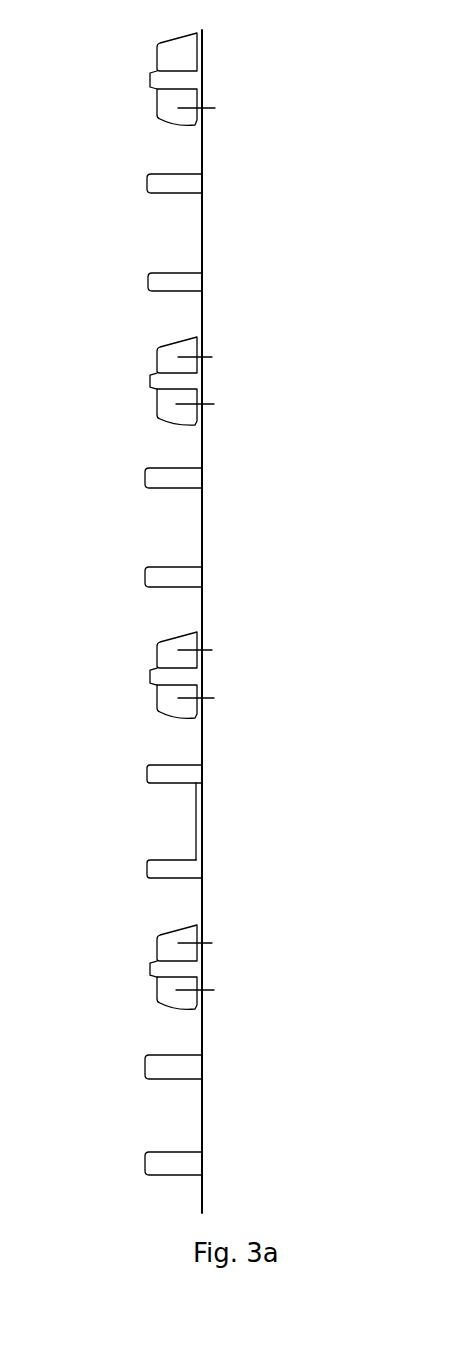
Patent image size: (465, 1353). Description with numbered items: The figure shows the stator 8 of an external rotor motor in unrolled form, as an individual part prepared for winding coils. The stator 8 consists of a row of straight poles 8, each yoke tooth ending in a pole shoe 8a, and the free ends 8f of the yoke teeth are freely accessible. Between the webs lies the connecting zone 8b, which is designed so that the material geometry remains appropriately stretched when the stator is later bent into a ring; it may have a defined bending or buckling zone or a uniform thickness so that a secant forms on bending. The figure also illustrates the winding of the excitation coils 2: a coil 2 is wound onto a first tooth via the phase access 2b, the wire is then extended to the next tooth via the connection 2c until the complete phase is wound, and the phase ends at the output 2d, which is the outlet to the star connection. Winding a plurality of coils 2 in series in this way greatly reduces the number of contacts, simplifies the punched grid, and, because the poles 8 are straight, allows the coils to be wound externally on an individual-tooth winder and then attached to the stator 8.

The coils 2 is at (152, 990).
The phase access 2b is at (249, 1013).
The connection 2c is at (210, 813).
The output 2d is at (183, 57).
The stator 8 is at (148, 768).
The pole shoe 8a is at (172, 771).
The connecting zone 8b is at (202, 912).
The free ends 8f is at (145, 865).